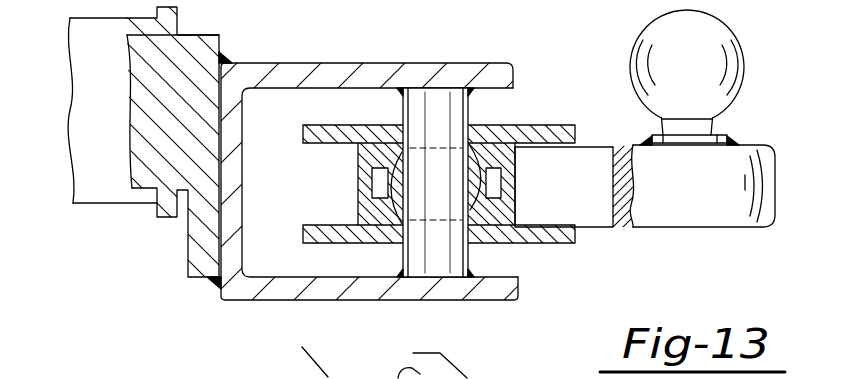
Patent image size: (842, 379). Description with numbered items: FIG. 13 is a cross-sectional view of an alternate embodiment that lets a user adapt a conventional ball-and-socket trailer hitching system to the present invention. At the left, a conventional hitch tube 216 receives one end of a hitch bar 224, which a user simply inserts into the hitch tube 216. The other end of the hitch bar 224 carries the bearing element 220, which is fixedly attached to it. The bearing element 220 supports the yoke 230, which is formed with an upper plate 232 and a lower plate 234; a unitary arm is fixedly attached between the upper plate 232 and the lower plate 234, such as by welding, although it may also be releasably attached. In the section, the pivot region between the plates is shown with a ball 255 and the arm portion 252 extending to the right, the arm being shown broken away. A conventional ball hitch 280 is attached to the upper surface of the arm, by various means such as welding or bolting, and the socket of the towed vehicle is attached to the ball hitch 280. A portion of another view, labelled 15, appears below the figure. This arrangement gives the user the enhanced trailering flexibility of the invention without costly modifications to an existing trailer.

The hitch tube 216 is at (97, 192).
The hitch bar 224 is at (220, 33).
The bearing element 220 is at (435, 75).
The yoke 230 is at (300, 180).
The upper plate 232 is at (526, 133).
The pivot ball 255 is at (515, 210).
The arm 252 is at (516, 221).
The lower plate 234 is at (548, 244).
The ball hitch 280 is at (712, 68).
The hitch assembly 15 is at (296, 357).